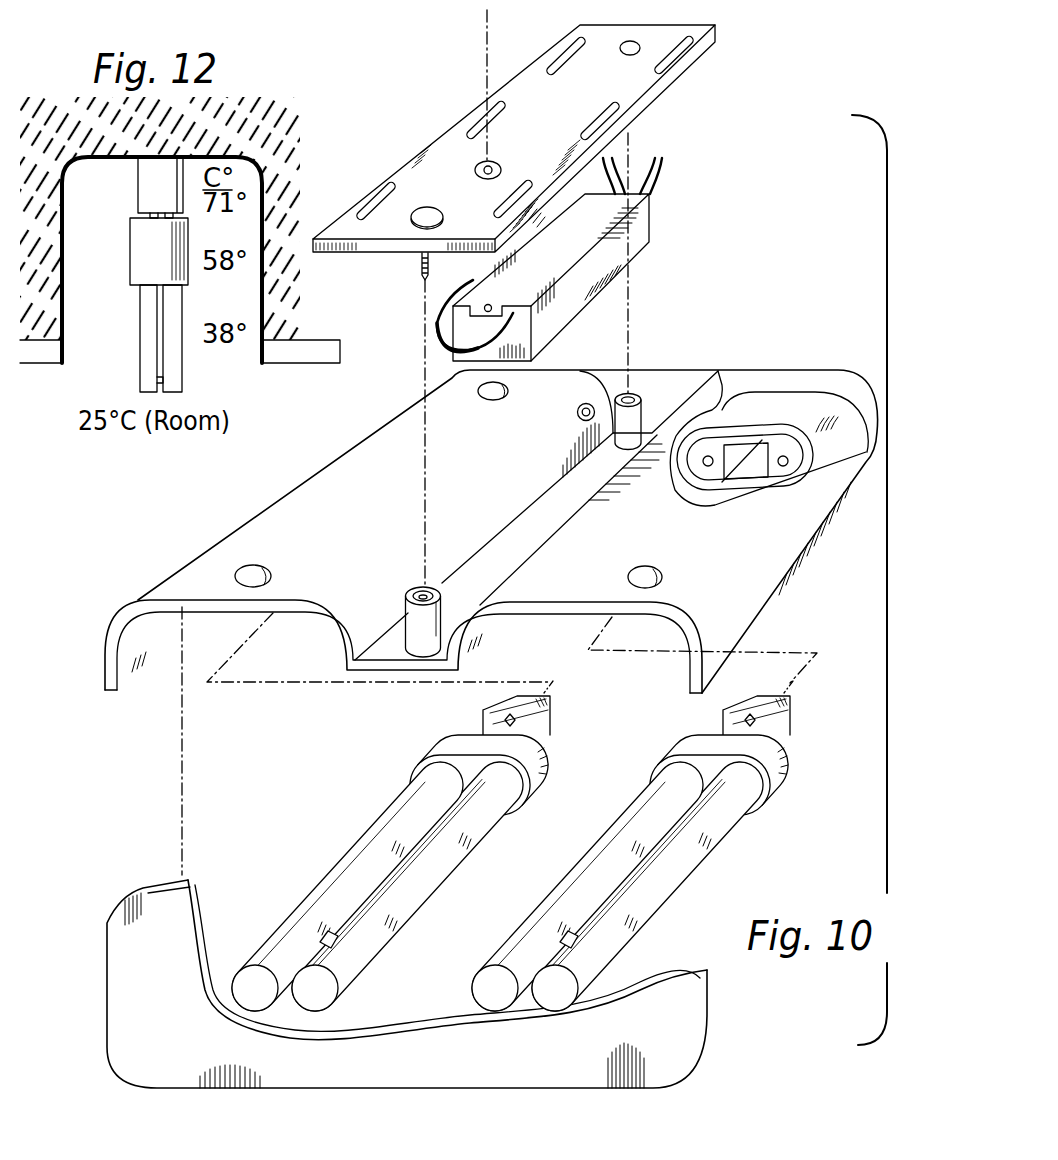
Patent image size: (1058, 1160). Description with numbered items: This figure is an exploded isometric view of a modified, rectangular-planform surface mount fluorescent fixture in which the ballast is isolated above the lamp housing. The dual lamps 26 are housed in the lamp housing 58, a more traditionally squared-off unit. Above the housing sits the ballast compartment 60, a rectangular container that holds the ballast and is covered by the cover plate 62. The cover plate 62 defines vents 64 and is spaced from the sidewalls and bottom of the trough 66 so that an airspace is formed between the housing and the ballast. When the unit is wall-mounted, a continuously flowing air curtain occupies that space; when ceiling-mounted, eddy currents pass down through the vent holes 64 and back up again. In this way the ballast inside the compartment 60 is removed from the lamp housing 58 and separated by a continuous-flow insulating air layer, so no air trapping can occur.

The dual lamps 26 is at (678, 860).
The lamp housing 58 is at (730, 567).
The ballast compartment 60 is at (615, 252).
The cover plate 62 is at (607, 88).
The vents 64 is at (697, 52).
The trough 66 is at (398, 647).